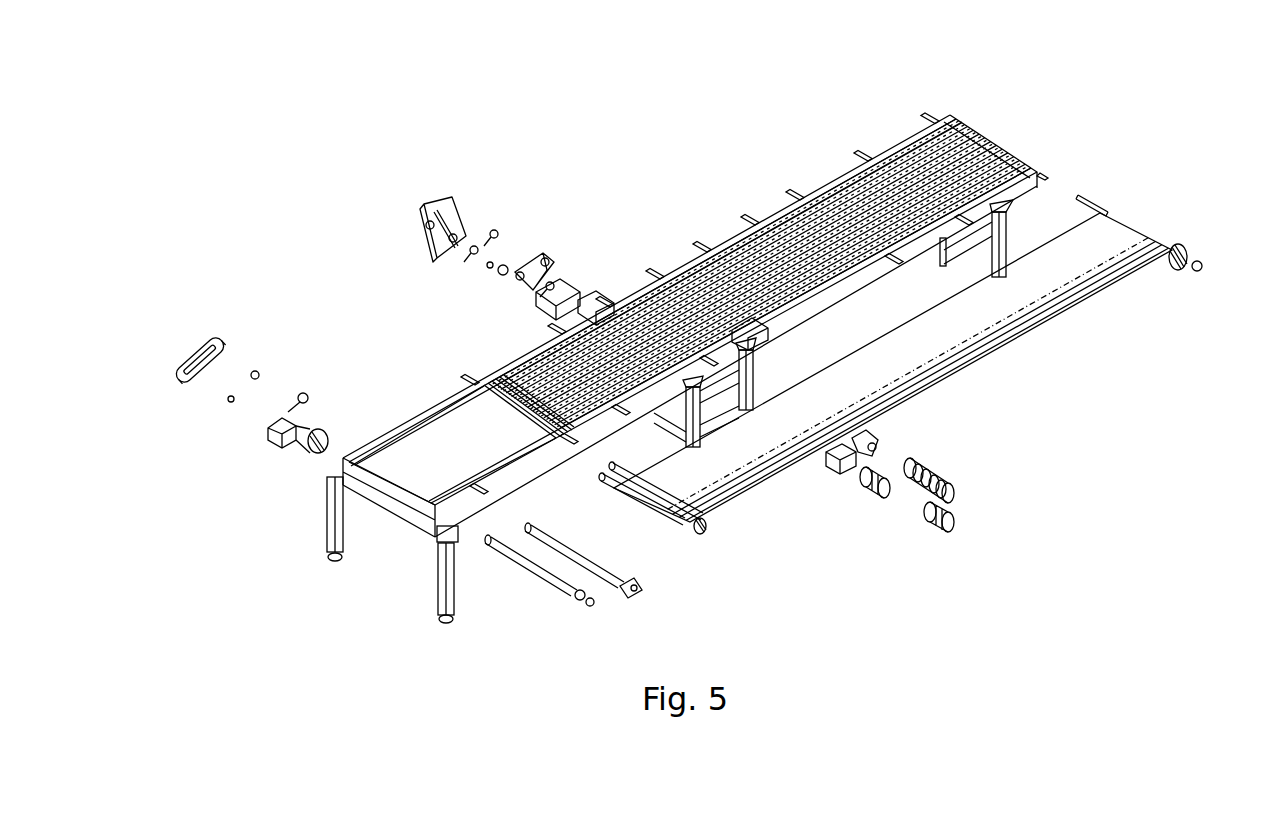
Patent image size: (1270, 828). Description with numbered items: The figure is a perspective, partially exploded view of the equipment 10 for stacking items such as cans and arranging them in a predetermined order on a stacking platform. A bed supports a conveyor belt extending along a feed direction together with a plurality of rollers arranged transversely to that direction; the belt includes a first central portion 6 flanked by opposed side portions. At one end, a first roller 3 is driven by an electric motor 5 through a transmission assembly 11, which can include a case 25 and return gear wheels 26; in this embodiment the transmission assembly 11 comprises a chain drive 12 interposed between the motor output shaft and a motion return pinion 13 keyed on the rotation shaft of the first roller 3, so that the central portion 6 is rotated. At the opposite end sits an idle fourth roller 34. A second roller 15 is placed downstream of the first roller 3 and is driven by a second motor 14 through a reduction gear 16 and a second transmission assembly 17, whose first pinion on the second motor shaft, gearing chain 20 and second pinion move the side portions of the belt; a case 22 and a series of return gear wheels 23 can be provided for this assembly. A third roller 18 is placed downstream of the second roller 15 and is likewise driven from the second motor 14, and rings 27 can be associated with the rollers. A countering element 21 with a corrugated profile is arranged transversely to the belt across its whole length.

The first roller 3 is at (550, 580).
The motor 5 is at (344, 456).
The central portion 6 is at (1100, 243).
The equipment 10 is at (1022, 126).
The transmission assembly 11 is at (291, 390).
The chain drive 12 is at (302, 392).
The motion return pinion 13 is at (316, 428).
The second motor 14 is at (607, 308).
The second roller 15 is at (830, 462).
The reduction gear 16 is at (558, 297).
The second transmission assembly 17 is at (552, 283).
The third roller 18 is at (868, 445).
The gearing chain 20 is at (520, 262).
The countering element 21 is at (520, 278).
The case 22 is at (422, 206).
The return gear wheels 23 is at (492, 238).
The case 25 is at (206, 350).
The return gear wheels 26 is at (231, 402).
The rings 27 is at (948, 485).
The fourth roller 34 is at (1081, 203).